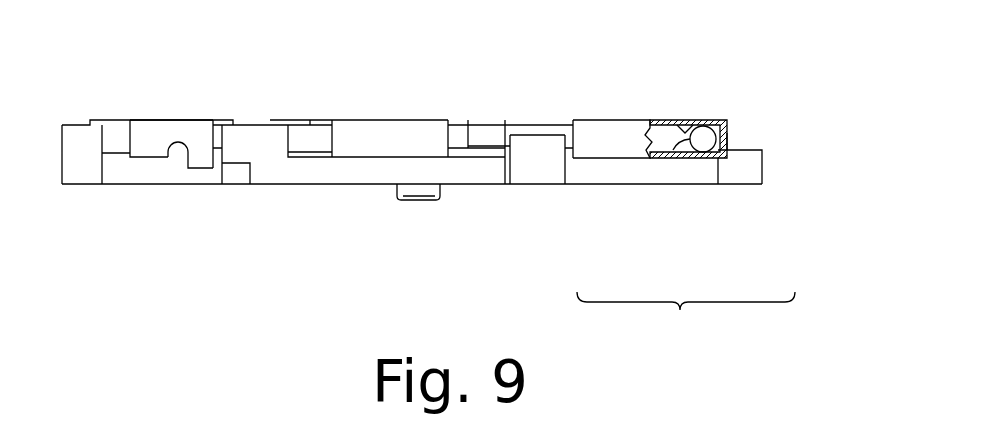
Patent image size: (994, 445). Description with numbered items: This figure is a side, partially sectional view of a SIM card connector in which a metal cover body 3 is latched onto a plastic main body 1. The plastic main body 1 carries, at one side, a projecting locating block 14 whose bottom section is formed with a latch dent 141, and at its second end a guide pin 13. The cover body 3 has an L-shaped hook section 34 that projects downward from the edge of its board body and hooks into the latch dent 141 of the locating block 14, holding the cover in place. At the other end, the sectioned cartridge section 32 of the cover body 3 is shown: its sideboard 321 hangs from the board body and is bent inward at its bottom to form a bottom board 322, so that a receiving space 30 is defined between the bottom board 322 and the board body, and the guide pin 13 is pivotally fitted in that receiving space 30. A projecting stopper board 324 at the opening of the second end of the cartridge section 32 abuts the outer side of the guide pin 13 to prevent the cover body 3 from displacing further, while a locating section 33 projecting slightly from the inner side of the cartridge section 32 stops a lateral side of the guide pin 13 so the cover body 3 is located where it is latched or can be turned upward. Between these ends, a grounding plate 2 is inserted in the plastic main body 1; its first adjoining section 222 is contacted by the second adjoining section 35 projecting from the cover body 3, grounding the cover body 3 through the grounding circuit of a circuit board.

The plastic main body 1 is at (357, 172).
The grounding plate 2 is at (527, 145).
The cover body 3 is at (343, 120).
The guide pin 13 is at (718, 135).
The locating block 14 is at (265, 160).
The latch dent 141 is at (241, 163).
The receiving space 30 is at (658, 135).
The cartridge section 32 is at (686, 316).
The locating section 33 is at (678, 128).
The L-shaped hook section 34 is at (200, 170).
The second adjoining section 35 is at (485, 135).
The first adjoining section 222 is at (538, 135).
The sideboard 321 is at (618, 143).
The bottom board 322 is at (707, 158).
The stopper board 324 is at (727, 133).